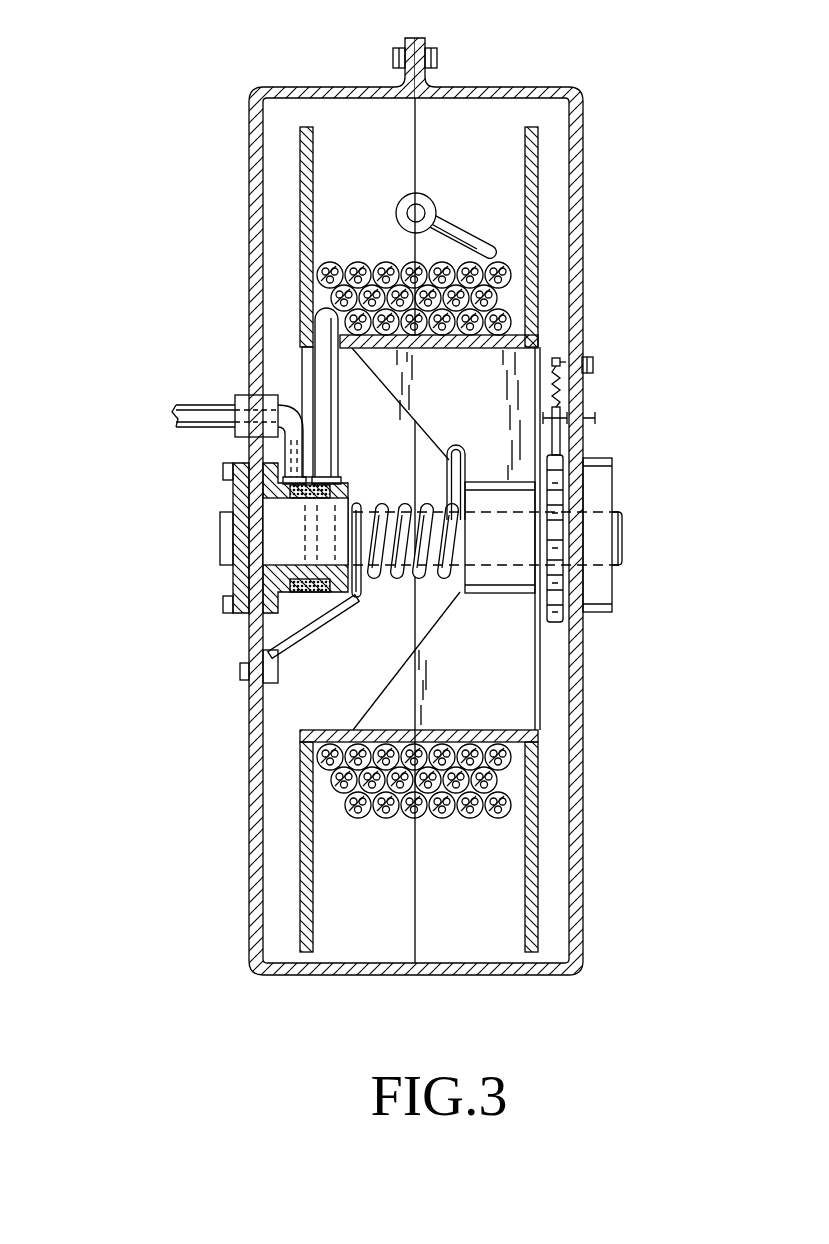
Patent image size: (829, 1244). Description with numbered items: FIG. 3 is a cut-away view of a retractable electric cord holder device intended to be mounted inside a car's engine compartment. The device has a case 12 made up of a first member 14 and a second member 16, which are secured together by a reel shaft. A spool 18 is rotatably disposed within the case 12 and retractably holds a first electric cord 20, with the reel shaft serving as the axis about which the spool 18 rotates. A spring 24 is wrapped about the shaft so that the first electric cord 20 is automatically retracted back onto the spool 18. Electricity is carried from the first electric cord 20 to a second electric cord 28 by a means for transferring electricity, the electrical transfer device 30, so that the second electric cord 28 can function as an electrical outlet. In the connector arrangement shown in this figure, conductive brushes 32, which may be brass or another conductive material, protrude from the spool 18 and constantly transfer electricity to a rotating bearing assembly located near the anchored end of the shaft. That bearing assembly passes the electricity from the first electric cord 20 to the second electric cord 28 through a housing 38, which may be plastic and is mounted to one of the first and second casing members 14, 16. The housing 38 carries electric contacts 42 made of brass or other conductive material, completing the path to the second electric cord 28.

The case 12 is at (379, 491).
The first member 14 is at (247, 230).
The second member 16 is at (582, 213).
The spool 18 is at (553, 692).
The first electric cord 20 is at (473, 822).
The spring 24 is at (291, 664).
The second electric cord 28 is at (161, 417).
The electrical transfer device 30 is at (288, 391).
The conductive brushes 32 is at (295, 604).
The housing 38 is at (270, 387).
The electric contacts 42 is at (268, 418).